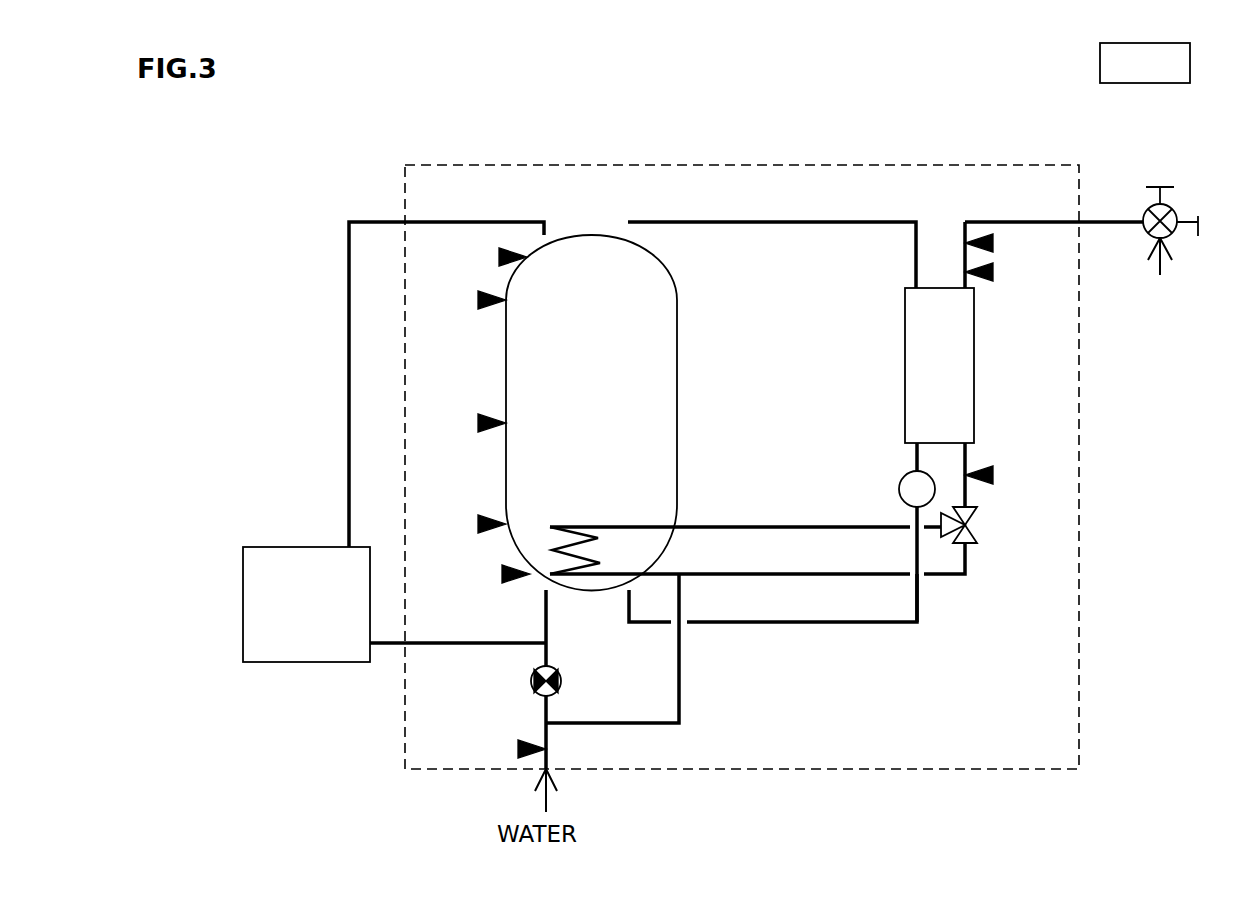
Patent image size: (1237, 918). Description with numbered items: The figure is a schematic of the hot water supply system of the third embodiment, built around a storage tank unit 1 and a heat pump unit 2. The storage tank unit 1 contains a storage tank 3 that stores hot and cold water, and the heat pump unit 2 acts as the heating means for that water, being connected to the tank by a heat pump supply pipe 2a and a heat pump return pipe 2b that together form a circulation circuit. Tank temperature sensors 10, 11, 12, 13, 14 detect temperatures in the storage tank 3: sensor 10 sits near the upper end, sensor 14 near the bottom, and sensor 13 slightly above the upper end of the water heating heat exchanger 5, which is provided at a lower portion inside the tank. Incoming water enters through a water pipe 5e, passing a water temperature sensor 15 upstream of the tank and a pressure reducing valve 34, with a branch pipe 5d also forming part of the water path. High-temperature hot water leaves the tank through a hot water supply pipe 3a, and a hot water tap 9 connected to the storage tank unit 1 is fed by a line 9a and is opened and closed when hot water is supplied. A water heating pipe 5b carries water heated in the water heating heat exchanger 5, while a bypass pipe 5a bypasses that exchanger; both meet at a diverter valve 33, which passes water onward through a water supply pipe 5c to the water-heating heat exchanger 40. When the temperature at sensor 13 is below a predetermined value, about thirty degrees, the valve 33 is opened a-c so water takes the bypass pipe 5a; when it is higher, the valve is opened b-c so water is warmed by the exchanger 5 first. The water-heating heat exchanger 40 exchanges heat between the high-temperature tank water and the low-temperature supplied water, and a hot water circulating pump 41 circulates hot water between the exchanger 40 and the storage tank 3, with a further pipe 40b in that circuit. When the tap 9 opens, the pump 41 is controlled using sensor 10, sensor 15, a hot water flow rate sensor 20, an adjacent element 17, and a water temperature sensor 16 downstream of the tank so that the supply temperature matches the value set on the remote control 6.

The storage tank unit 1 is at (405, 196).
The heat pump unit 2 is at (308, 547).
The heat pump supply pipe 2a is at (450, 643).
The heat pump return pipe 2b is at (349, 402).
The storage tank 3 is at (506, 372).
The hot water supply pipe 3a is at (720, 222).
The water heating heat exchanger 5 is at (575, 527).
The bypass pipe 5a is at (938, 578).
The water heating pipe 5b is at (748, 527).
The water supply pipe 5c is at (965, 462).
The branch pipe 5d is at (612, 665).
The water pipe 5e is at (546, 613).
The remote control 6 is at (1100, 62).
The hot water tap 9 is at (1160, 187).
The hot water supply pipe 9a is at (980, 222).
The tank temperature sensor 10 is at (497, 258).
The tank temperature sensor 11 is at (477, 301).
The tank temperature sensor 12 is at (477, 424).
The tank temperature sensor 13 is at (477, 525).
The tank temperature sensor 14 is at (501, 575).
The water temperature sensor 15 is at (517, 750).
The water temperature sensor 16 is at (996, 476).
The temperature sensor 17 is at (996, 273).
The hot water flow rate sensor 20 is at (996, 244).
The diverter valve 33 is at (973, 528).
The pressure reducing valve 34 is at (529, 681).
The water-heating heat exchanger 40 is at (974, 365).
The pipe 40b is at (815, 624).
The hot water circulating pump 41 is at (899, 489).